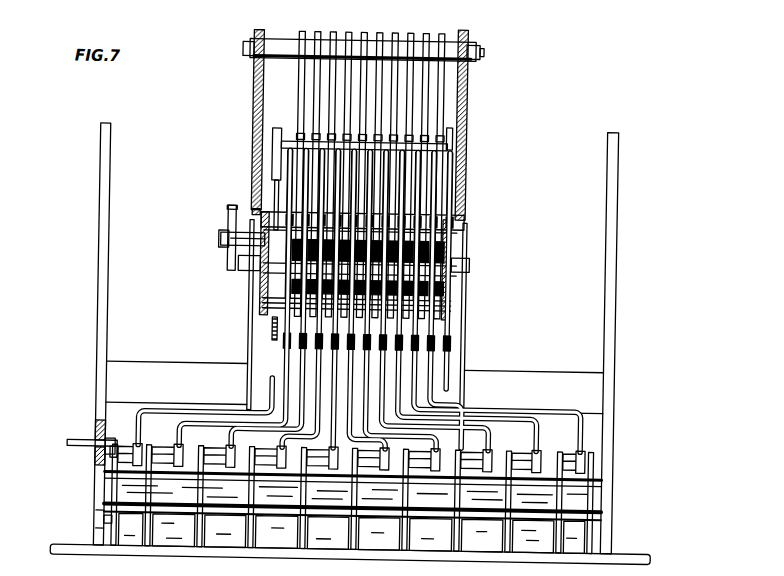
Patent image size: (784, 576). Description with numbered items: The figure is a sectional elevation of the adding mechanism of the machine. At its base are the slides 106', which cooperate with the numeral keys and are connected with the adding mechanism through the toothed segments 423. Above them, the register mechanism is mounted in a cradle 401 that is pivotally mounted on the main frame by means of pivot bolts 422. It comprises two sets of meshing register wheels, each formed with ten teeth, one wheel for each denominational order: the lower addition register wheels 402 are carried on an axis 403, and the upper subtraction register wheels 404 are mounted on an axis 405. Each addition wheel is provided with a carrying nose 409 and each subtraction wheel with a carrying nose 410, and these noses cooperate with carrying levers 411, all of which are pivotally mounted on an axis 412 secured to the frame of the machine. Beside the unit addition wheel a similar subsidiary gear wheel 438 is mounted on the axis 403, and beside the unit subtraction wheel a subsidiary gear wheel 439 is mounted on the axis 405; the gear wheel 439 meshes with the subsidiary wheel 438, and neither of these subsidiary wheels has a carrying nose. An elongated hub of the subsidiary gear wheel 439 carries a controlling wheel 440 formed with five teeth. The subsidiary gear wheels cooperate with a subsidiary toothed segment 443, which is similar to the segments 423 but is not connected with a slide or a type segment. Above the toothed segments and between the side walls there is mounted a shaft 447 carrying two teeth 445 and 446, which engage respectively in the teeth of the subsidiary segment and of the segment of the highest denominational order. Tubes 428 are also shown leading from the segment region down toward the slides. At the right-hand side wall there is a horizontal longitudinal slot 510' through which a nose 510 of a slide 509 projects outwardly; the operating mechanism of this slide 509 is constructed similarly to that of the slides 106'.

The axis 412 is at (285, 42).
The carrying levers 411 is at (375, 34).
The shaft 447 is at (296, 142).
The tooth 445 is at (271, 137).
The tooth 446 is at (449, 139).
The cradle 401 is at (260, 215).
The subsidiary gear wheel 439 is at (252, 213).
The controlling wheel 440 is at (226, 215).
The axis 405 is at (226, 241).
The toothed segments 423 is at (417, 176).
The register wheels 404 is at (438, 204).
The carrying nose 410 is at (453, 231).
The pivot bolts 422 is at (461, 261).
The axis 403 is at (451, 289).
The subsidiary gear wheel 438 is at (262, 300).
The register wheels 402 is at (296, 298).
The subsidiary toothed segment 443 is at (270, 324).
The carrying nose 409 is at (294, 318).
The tubes 428 is at (218, 418).
The nose 510 is at (81, 433).
The horizontal longitudinal slot 510' is at (83, 453).
The slide 509 is at (108, 525).
The slides 106' is at (383, 509).